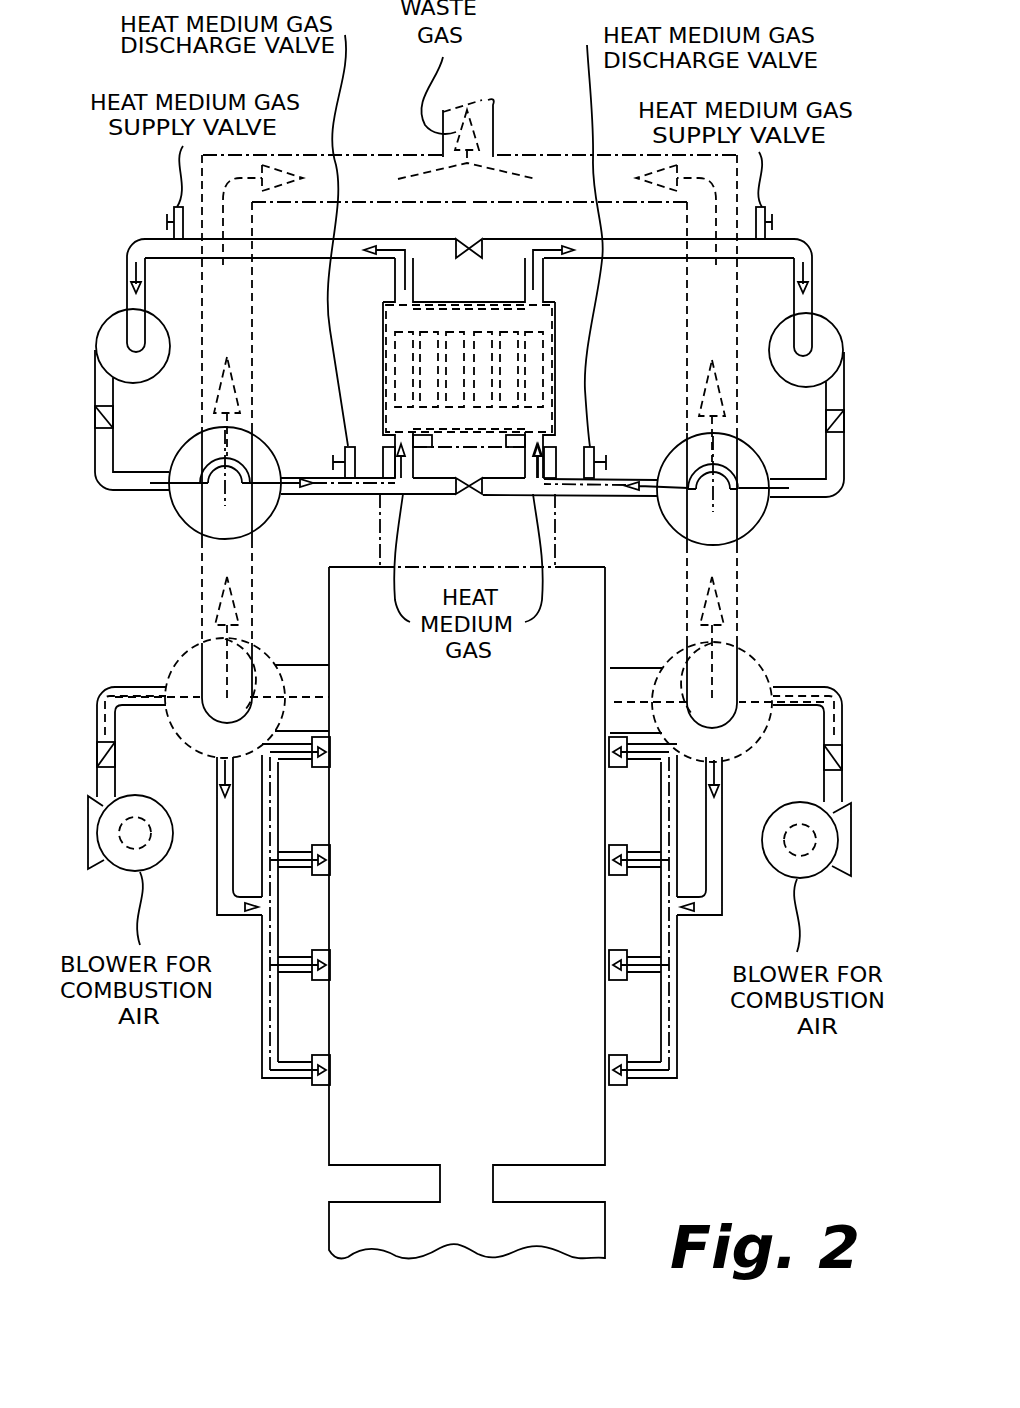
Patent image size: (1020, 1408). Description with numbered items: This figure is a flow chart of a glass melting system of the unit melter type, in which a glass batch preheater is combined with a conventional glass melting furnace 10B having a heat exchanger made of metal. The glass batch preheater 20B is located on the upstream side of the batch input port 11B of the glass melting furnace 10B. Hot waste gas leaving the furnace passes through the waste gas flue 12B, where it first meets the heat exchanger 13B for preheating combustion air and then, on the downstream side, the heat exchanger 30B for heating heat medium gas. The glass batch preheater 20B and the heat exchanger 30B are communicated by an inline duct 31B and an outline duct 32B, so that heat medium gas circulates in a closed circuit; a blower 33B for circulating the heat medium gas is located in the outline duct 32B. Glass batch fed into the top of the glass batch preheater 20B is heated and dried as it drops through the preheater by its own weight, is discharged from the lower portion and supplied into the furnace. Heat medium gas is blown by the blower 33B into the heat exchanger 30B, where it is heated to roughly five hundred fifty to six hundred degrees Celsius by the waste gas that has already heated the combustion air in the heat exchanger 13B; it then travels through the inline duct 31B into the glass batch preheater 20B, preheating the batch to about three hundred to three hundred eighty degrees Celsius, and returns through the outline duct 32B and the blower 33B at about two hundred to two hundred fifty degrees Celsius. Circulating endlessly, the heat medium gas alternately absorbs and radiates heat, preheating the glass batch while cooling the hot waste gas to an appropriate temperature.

The glass melting furnace 10B is at (492, 981).
The batch input port 11B is at (492, 544).
The waste gas flue 12B is at (200, 628).
The heat exchanger for preheating combustion air 13B is at (202, 755).
The glass batch preheater 20B is at (553, 322).
The heat exchanger for heating heat medium gas 30B is at (183, 521).
The inline duct 31B is at (330, 496).
The outline duct 32B is at (291, 258).
The blower for circulating heat medium gas 33B is at (97, 340).